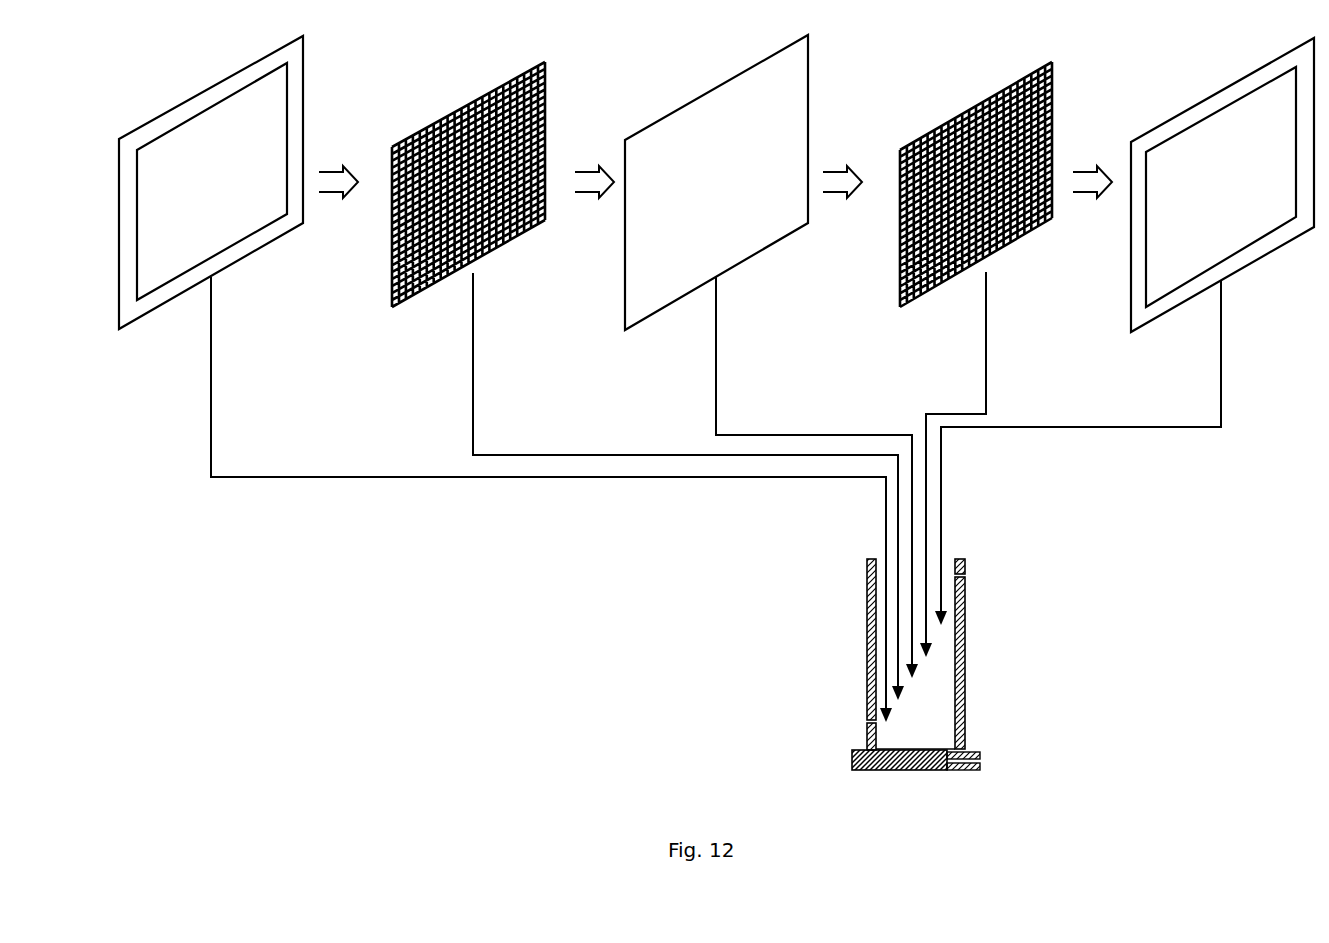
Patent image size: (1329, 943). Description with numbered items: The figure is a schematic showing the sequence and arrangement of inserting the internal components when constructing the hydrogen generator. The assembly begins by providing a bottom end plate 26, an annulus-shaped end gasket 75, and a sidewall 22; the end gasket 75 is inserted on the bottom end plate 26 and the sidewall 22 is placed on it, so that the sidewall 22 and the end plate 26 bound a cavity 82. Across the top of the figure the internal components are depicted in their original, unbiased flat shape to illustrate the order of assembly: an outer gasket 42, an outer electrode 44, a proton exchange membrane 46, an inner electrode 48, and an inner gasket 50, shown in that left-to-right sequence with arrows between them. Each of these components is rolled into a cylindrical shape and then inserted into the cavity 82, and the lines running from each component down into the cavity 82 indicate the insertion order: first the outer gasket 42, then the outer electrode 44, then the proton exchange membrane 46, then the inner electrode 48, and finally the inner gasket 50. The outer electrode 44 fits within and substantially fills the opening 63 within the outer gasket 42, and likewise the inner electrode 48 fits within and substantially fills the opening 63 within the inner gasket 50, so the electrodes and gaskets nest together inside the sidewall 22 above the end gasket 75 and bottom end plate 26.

The outer gasket 42 is at (255, 255).
The outer electrode 44 is at (495, 243).
The proton exchange membrane 46 is at (757, 255).
The inner electrode 48 is at (1010, 243).
The inner gasket 50 is at (1239, 266).
The opening 63 is at (198, 194).
The sidewall 22 is at (966, 661).
The cavity 82 is at (909, 732).
The bottom end plate 26 is at (852, 761).
The end gasket 75 is at (960, 749).